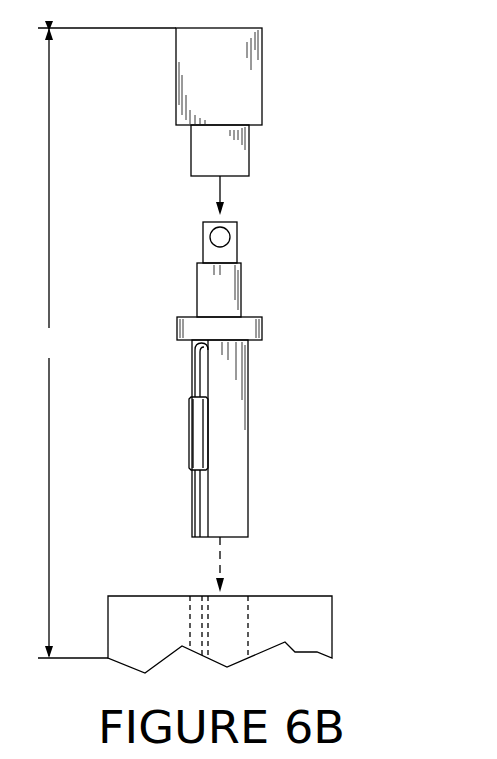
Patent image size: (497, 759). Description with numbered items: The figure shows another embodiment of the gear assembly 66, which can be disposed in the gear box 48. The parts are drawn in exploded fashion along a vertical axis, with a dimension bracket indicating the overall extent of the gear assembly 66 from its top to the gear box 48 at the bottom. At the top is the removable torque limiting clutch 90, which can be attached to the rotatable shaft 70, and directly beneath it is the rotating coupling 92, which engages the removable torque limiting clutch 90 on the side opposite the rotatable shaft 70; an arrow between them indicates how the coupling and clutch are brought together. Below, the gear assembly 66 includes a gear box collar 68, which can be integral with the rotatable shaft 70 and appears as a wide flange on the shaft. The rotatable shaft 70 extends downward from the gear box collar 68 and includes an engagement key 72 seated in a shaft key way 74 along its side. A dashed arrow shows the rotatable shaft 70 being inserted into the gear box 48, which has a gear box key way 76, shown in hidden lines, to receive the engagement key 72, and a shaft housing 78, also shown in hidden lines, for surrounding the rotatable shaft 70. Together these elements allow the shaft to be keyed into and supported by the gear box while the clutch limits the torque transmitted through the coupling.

The gear box 48 is at (307, 615).
The gear assembly 66 is at (106, 343).
The gear box collar 68 is at (245, 328).
The rotatable shaft 70 is at (303, 412).
The engagement key 72 is at (197, 433).
The shaft key way 74 is at (205, 377).
The gear box key way 76 is at (190, 608).
The shaft housing 78 is at (248, 608).
The removable torque limiting clutch 90 is at (243, 78).
The rotating coupling 92 is at (210, 150).